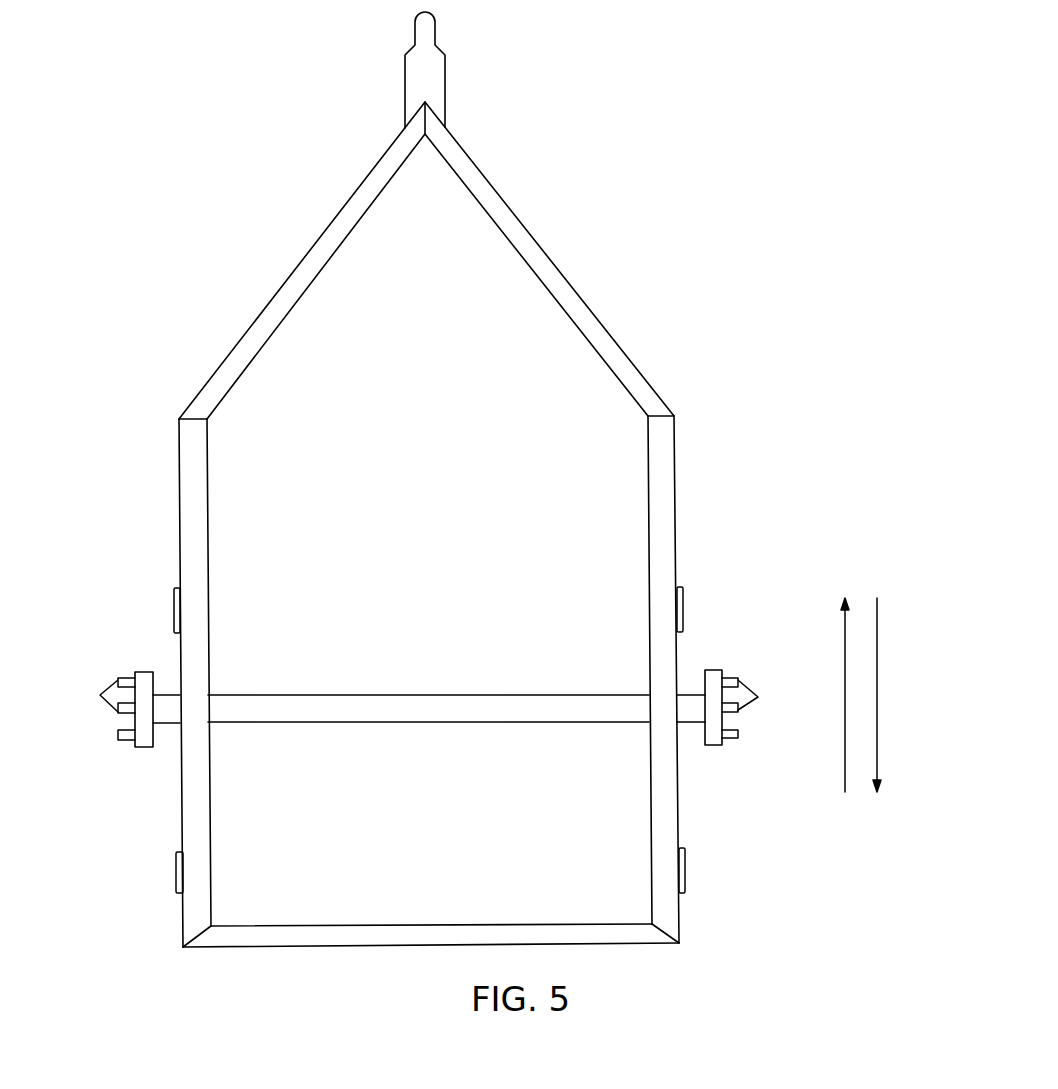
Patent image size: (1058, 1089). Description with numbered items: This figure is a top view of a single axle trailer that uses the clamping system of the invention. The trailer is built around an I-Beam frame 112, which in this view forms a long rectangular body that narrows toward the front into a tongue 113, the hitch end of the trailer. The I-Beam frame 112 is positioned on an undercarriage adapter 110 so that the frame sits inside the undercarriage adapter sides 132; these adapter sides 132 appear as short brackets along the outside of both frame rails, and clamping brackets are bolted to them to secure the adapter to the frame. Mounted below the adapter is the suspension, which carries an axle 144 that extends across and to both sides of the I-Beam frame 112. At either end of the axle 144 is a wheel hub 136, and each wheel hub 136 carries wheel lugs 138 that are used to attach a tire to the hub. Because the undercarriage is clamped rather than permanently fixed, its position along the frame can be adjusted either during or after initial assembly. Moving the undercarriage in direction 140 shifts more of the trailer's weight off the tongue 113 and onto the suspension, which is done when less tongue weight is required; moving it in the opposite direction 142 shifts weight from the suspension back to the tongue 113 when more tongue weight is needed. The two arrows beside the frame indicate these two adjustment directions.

The first undercarriage adapter 110 is at (178, 887).
The I-Beam frame 112 is at (572, 283).
The tongue 113 is at (405, 83).
The undercarriage adapter sides 132 is at (174, 612).
The wheel hub 136 is at (145, 747).
The wheel lugs 138 is at (107, 697).
The direction 140 is at (877, 678).
The direction 142 is at (845, 755).
The axle 144 is at (430, 722).